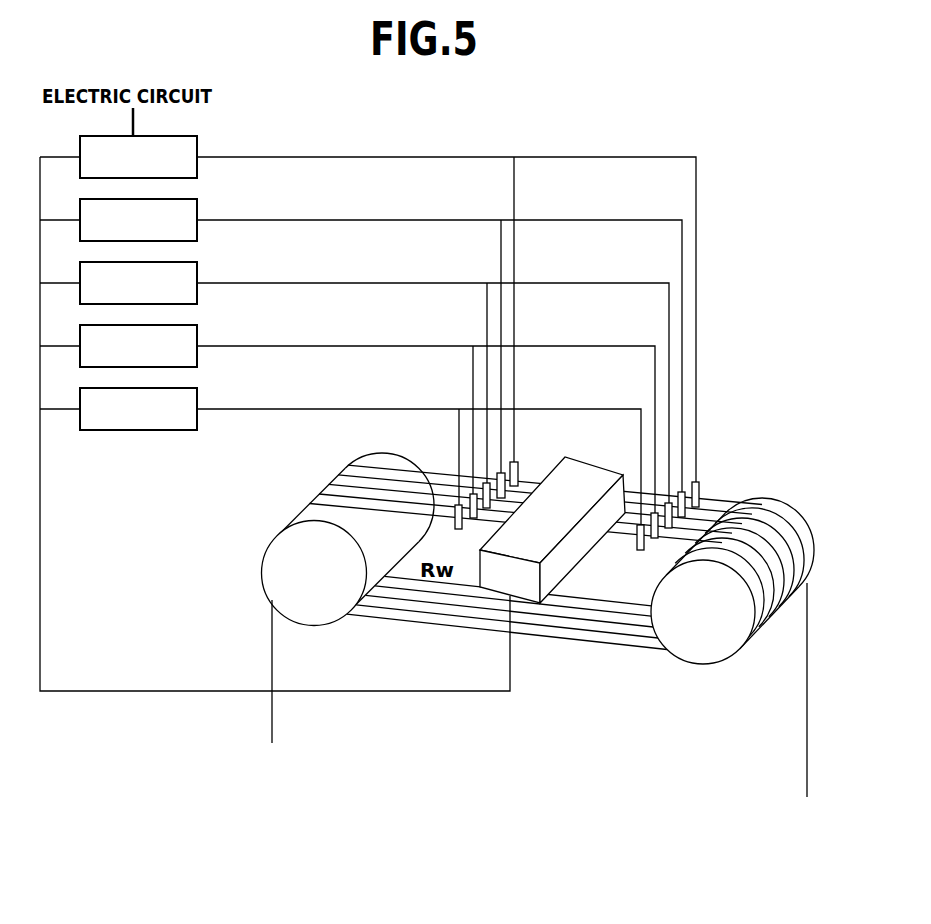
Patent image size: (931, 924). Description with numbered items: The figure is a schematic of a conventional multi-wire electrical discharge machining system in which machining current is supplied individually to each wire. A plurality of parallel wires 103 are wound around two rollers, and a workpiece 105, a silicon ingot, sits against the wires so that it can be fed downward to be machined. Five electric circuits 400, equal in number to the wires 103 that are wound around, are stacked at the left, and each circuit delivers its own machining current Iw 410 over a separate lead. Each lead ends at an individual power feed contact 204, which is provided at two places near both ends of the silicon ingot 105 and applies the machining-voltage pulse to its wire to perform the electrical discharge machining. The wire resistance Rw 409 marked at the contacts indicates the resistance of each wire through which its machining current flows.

The electric circuit 400 is at (118, 283).
The machining current (Iw) 410 is at (314, 157).
The individual power feed contact 204 is at (516, 461).
The wire resistance (Rw) 409 is at (478, 528).
The workpiece 105 is at (588, 567).
The wire 103 is at (272, 718).